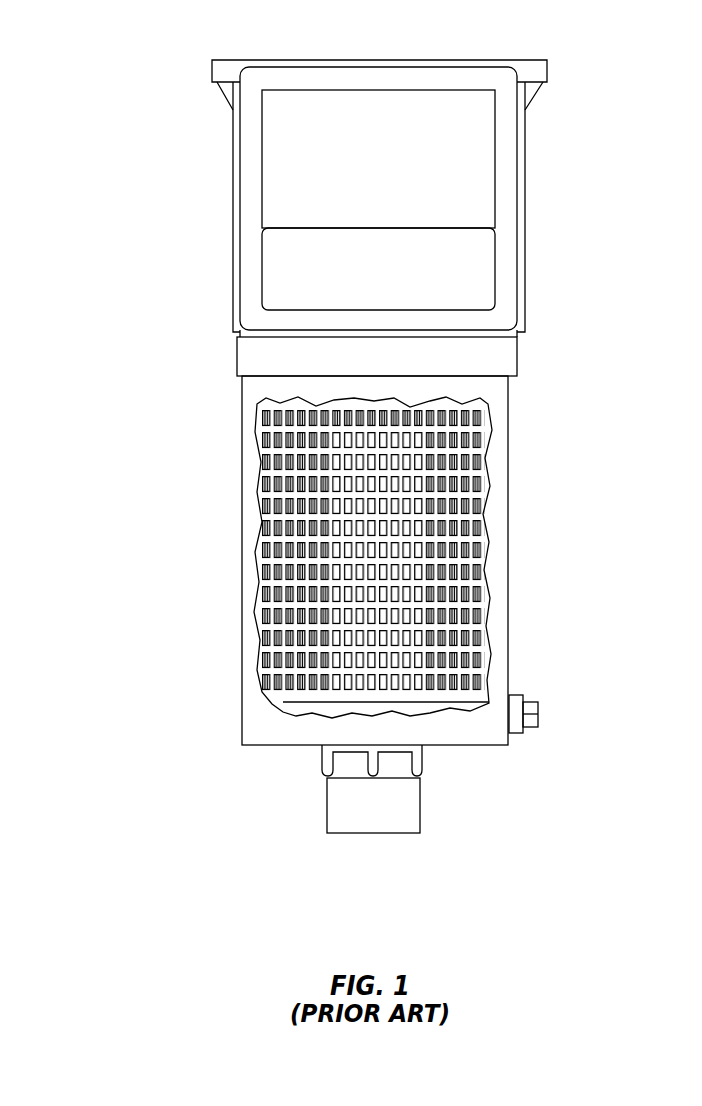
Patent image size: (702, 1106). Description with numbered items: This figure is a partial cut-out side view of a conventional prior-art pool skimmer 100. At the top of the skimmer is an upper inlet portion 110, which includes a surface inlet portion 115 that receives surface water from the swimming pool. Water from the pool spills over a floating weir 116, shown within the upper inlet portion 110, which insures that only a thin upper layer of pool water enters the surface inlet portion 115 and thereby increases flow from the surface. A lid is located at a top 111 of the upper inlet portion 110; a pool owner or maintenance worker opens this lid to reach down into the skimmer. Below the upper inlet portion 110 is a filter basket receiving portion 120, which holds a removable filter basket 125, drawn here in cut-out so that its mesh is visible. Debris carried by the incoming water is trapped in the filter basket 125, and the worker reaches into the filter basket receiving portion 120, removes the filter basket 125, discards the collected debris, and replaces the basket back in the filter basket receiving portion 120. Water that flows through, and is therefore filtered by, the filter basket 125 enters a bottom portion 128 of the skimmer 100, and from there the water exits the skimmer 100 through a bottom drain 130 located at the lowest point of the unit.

The pool skimmer 100 is at (308, 449).
The upper inlet portion 110 is at (364, 198).
The top 111 is at (418, 60).
The surface inlet portion 115 is at (398, 157).
The floating weir 116 is at (398, 274).
The filter basket receiving portion 120 is at (360, 590).
The filter basket 125 is at (487, 458).
The bottom portion 128 is at (305, 710).
The bottom drain 130 is at (388, 833).